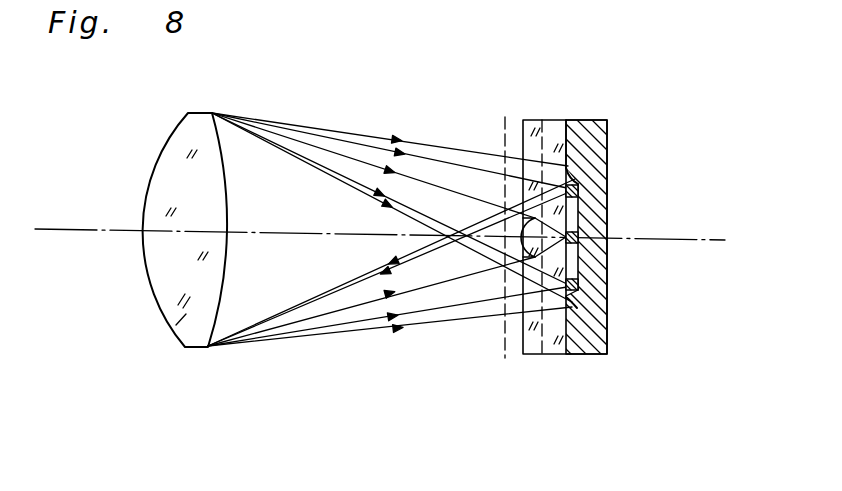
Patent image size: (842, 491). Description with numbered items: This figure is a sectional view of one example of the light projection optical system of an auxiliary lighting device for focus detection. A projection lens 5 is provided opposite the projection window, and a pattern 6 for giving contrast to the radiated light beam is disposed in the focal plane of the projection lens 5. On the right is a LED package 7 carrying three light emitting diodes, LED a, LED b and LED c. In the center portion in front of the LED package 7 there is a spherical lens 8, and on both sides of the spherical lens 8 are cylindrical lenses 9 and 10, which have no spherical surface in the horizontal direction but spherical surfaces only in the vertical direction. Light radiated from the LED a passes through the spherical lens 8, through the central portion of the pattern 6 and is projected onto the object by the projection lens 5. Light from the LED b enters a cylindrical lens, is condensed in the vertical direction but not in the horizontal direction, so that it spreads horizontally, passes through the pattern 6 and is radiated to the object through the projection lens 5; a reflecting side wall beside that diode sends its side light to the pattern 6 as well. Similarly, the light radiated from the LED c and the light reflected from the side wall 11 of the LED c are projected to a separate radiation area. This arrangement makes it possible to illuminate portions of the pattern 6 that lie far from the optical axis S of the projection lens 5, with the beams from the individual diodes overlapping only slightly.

The optical axis S is at (367, 232).
The projection lens 5 is at (185, 322).
The pattern 6 is at (507, 343).
The LED package 7 is at (577, 248).
The spherical lens 8 is at (522, 243).
The cylindrical lens 9 is at (535, 127).
The cylindrical lens 10 is at (580, 167).
The side wall 11 is at (577, 309).
The LED a is at (578, 237).
The LED b is at (578, 191).
The LED c is at (577, 283).